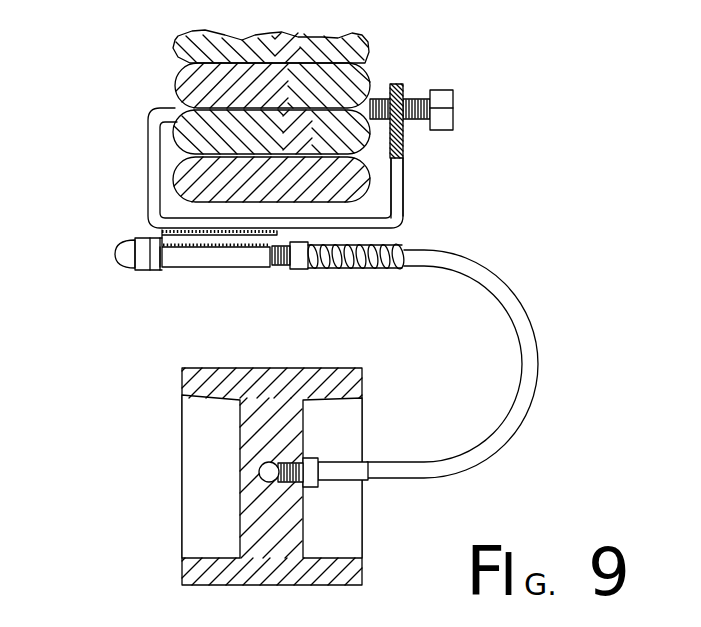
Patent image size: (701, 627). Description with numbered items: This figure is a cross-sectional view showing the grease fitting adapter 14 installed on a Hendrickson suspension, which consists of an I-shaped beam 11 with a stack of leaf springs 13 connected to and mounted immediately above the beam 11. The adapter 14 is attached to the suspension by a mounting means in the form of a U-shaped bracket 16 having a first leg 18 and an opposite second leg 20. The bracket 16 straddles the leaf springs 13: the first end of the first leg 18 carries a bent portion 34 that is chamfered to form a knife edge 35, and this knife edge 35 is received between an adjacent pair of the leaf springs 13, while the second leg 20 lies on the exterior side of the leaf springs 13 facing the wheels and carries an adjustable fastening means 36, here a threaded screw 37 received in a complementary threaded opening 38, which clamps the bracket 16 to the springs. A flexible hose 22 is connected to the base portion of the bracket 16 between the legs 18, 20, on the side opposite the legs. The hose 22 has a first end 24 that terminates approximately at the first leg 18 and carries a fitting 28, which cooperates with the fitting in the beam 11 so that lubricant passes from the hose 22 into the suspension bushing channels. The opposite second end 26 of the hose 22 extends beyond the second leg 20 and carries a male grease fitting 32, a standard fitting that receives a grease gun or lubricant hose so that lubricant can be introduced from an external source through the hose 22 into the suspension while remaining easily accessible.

The I-shaped beam 11 is at (182, 385).
The leaf springs 13 is at (331, 75).
The grease fitting adapter 14 is at (446, 200).
The U-shaped bracket 16 is at (247, 247).
The first leg 18 is at (148, 155).
The second leg 20 is at (403, 170).
The hose 22 is at (521, 335).
The first end 24 is at (388, 472).
The second end 26 is at (413, 258).
The fitting 28 is at (287, 483).
The male grease fitting 32 is at (117, 252).
The bent portion 34 is at (165, 122).
The knife edge 35 is at (172, 103).
The adjustable fastening means 36 is at (442, 93).
The threaded screw 37 is at (413, 98).
The threaded opening 38 is at (403, 118).